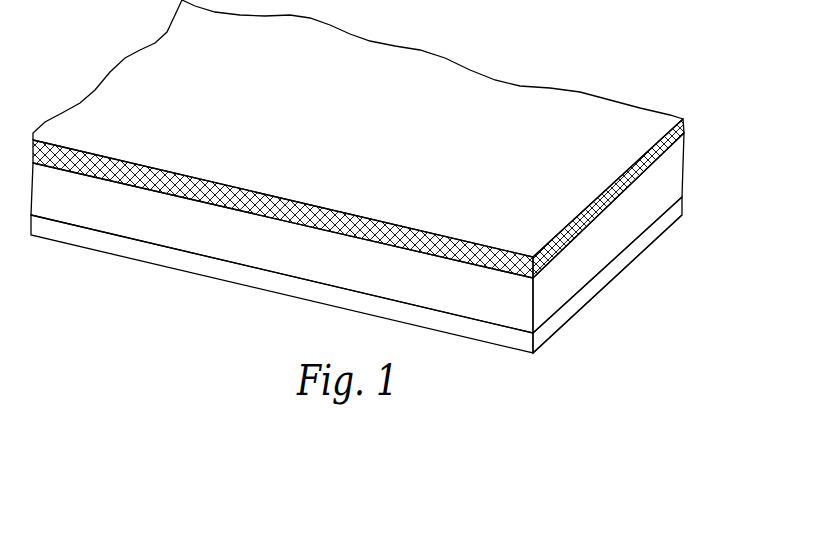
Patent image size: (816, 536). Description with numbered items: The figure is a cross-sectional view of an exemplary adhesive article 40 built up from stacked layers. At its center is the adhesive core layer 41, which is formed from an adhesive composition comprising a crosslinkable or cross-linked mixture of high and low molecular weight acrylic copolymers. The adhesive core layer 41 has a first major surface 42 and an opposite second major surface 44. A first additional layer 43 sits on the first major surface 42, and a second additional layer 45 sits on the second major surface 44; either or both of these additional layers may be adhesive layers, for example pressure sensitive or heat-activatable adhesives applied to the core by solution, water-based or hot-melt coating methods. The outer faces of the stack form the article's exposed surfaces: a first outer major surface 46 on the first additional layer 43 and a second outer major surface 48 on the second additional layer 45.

The adhesive article 40 is at (606, 61).
The adhesive core layer 41 is at (676, 170).
The first major surface 42 is at (177, 196).
The first additional layer 43 is at (684, 126).
The second major surface 44 is at (247, 268).
The second additional layer 45 is at (680, 205).
The first outer major surface 46 is at (127, 84).
The second outer major surface 48 is at (630, 257).